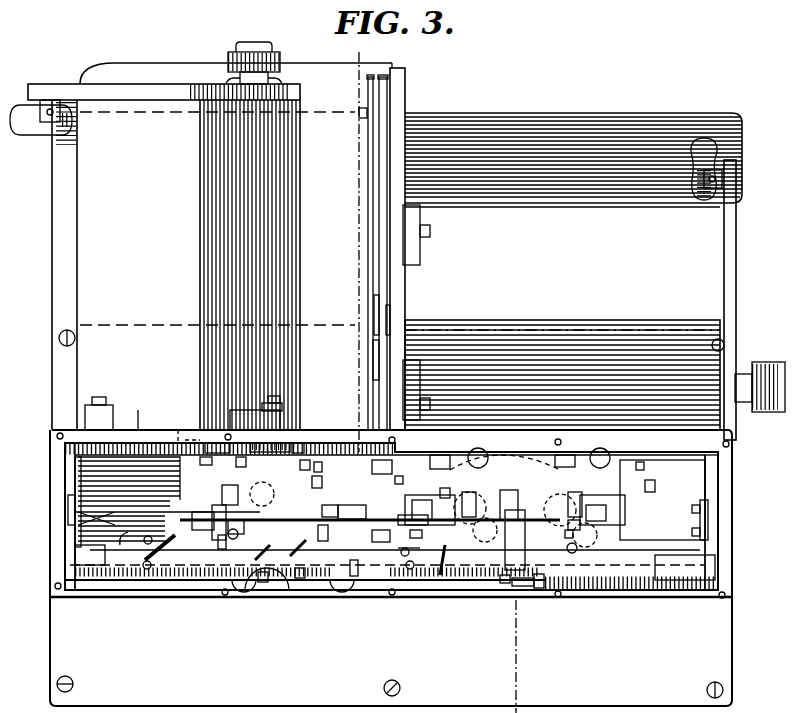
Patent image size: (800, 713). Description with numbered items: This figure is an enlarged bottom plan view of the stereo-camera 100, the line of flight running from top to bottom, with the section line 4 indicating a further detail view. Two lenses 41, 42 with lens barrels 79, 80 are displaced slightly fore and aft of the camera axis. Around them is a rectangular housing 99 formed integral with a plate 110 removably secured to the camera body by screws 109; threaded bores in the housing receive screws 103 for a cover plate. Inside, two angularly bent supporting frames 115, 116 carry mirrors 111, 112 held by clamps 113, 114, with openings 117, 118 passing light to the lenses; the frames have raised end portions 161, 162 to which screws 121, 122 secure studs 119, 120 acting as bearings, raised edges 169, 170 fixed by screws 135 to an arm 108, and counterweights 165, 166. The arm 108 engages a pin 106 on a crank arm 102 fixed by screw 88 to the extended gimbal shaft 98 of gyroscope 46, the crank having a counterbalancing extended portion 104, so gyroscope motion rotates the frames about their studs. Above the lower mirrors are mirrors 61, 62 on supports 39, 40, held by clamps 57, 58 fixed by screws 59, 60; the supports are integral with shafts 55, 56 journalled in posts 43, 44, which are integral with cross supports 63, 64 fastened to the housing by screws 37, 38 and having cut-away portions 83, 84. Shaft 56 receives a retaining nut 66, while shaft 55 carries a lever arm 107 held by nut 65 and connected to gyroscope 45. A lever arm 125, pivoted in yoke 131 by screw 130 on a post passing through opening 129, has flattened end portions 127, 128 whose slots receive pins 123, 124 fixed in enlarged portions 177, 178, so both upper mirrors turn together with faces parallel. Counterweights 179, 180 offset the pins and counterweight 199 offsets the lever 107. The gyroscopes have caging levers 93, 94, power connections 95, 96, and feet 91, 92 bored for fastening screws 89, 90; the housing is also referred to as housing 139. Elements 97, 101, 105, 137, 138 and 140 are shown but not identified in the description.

The section line 4 is at (352, 60).
The screws 37 is at (273, 471).
The screws 38 is at (535, 539).
The mirror support 39 is at (232, 542).
The mirror support 40 is at (528, 496).
The lens 41 is at (222, 498).
The lens 42 is at (573, 535).
The post 43 is at (262, 484).
The post 44 is at (515, 540).
The gyroscope 45 is at (71, 247).
The gyroscope 46 is at (577, 201).
The shaft 55 is at (243, 529).
The shaft 56 is at (514, 505).
The clamp 57 is at (279, 555).
The clamp 58 is at (525, 495).
The screws 59 is at (217, 540).
The screws 60 is at (485, 500).
The mirror 61 is at (160, 550).
The mirror 62 is at (602, 510).
The cross support 63 is at (296, 452).
The cross support 64 is at (540, 585).
The nut 65 is at (288, 428).
The retaining nut 66 is at (504, 584).
The lens barrel 79 is at (262, 584).
The lens barrel 80 is at (568, 456).
The cut away portion 83 is at (280, 444).
The cut away portion 84 is at (522, 586).
The screw 88 is at (372, 300).
The screw 89 is at (99, 397).
The screw 90 is at (431, 231).
The foot 91 is at (115, 405).
The foot 92 is at (412, 247).
The caging lever 93 is at (30, 132).
The caging lever 94 is at (703, 140).
The power connection 95 is at (258, 42).
The power connection 96 is at (765, 362).
The slot 97 is at (184, 432).
The extended gimbal shaft 98 is at (390, 318).
The rectangular housing 99 is at (60, 538).
The stereo-camera 100 is at (542, 114).
The plate 101 is at (175, 437).
The crank arm 102 is at (380, 238).
The screws 103 is at (56, 436).
The extended portion 104 is at (373, 356).
The bracket 105 is at (210, 469).
The pin 106 is at (360, 116).
The lever arm 107 is at (212, 442).
The arm 108 is at (368, 182).
The screws 109 is at (58, 338).
The plate 110 is at (52, 390).
The mirror 111 is at (140, 556).
The mirror 112 is at (656, 488).
The clamps 113 is at (144, 538).
The clamps 114 is at (655, 462).
The supporting frame 115 is at (100, 484).
The supporting frame 116 is at (690, 500).
The opening 117 is at (212, 508).
The opening 118 is at (578, 526).
The stud 119 is at (68, 512).
The stud 120 is at (710, 520).
The screws 121 is at (115, 518).
The screws 122 is at (692, 533).
The pin 123 is at (330, 508).
The pin 124 is at (423, 533).
The lever arm 125 is at (430, 510).
The flattened end portion 127 is at (356, 507).
The flattened end portion 128 is at (417, 525).
The opening 129 is at (420, 548).
The screw 130 is at (443, 492).
The yoke 131 is at (442, 572).
The screws 135 is at (322, 467).
The cam 137 is at (300, 580).
The pin 138 is at (583, 553).
The housing 139 is at (236, 575).
The roller 140 is at (471, 456).
The raised end portion 161 is at (74, 470).
The raised end portion 162 is at (718, 478).
The counterweight 165 is at (88, 555).
The counterweight 166 is at (685, 580).
The raised edge 169 is at (322, 482).
The raised edge 170 is at (392, 468).
The enlarged portion 177 is at (355, 578).
The enlarged portion 178 is at (437, 456).
The counterweight 179 is at (195, 519).
The counterweight 180 is at (606, 513).
The counterweight 199 is at (269, 583).